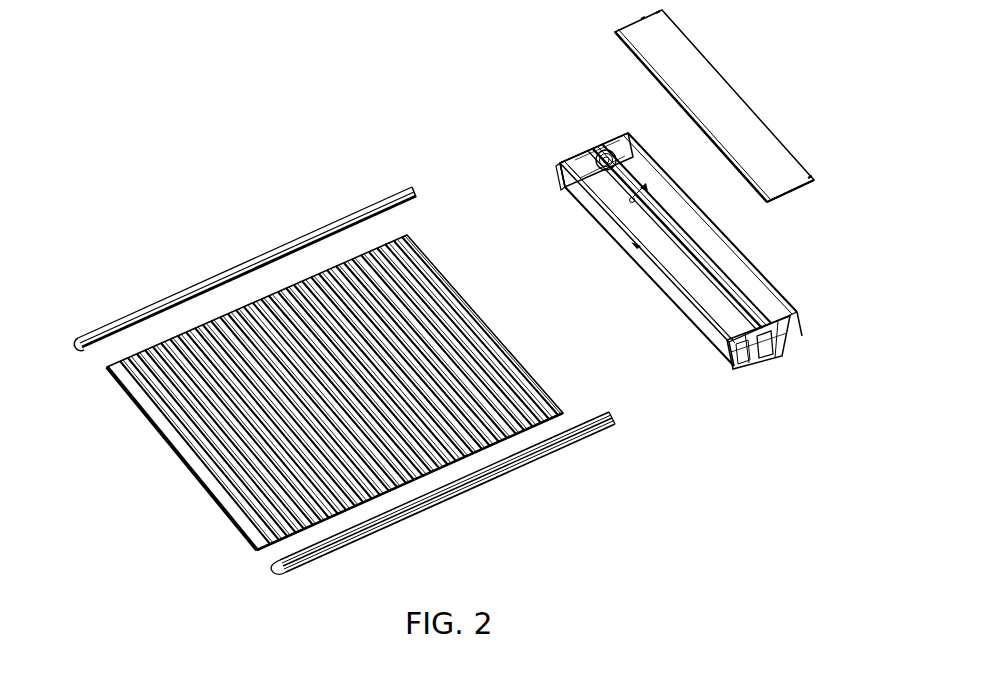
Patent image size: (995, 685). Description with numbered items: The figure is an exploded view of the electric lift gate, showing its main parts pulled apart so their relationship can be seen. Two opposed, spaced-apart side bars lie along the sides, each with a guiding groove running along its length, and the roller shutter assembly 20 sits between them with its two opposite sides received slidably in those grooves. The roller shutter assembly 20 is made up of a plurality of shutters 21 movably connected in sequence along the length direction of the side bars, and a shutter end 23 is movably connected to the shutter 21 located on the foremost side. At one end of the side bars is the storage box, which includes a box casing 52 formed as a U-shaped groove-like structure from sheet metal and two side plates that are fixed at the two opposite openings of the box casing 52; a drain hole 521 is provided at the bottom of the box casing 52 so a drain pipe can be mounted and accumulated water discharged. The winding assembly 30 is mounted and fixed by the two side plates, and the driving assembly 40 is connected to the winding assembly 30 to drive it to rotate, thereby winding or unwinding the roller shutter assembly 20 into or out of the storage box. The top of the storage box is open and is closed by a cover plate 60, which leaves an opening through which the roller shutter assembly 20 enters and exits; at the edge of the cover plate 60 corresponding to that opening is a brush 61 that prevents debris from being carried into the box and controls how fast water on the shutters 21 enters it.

The roller shutter assembly 20 is at (318, 392).
The shutter 21 is at (498, 365).
The shutter end 23 is at (227, 502).
The winding assembly 30 is at (637, 249).
The driving assembly 40 is at (742, 373).
The box casing 52 is at (697, 327).
The drain hole 521 is at (645, 185).
The cover plate 60 is at (693, 106).
The brush 61 is at (633, 57).